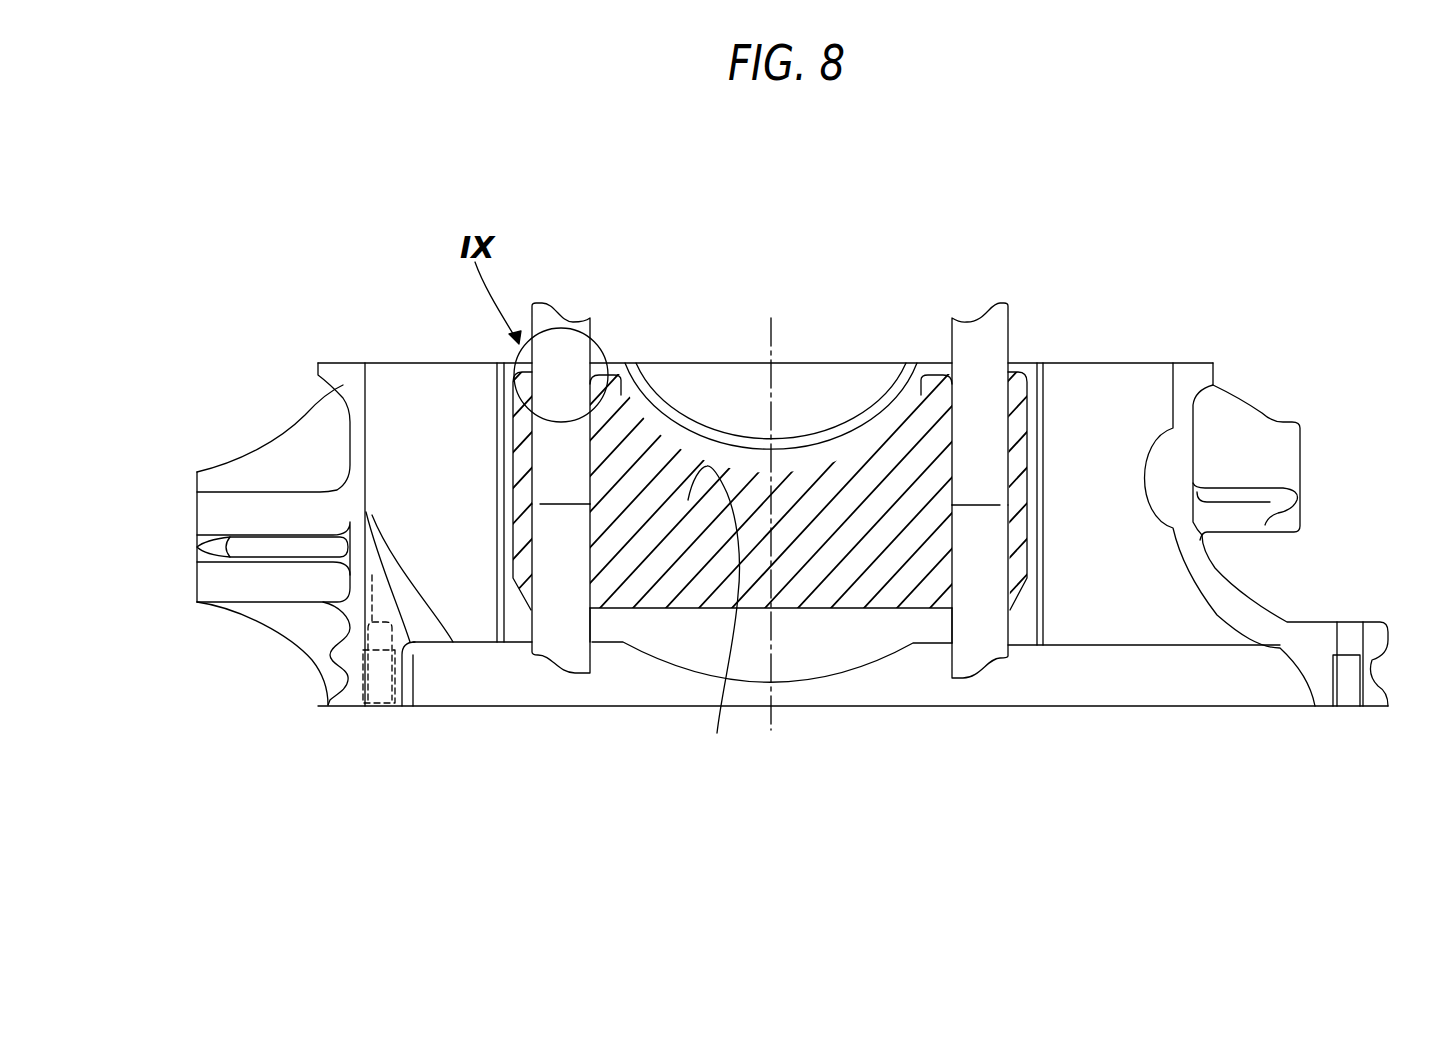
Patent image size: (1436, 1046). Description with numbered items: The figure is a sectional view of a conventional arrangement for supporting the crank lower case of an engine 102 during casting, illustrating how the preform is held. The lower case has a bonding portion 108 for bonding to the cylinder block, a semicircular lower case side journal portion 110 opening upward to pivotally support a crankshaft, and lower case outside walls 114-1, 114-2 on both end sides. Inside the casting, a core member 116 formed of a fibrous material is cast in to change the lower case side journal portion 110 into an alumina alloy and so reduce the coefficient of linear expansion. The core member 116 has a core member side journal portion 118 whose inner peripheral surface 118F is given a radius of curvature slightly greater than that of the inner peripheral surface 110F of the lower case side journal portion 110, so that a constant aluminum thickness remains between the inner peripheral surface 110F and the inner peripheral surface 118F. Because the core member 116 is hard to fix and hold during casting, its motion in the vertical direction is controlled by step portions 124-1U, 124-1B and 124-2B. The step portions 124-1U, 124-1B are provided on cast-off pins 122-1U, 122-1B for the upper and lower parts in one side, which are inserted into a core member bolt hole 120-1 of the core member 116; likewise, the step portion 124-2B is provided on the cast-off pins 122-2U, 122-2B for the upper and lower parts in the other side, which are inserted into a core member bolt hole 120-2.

The engine 102 is at (1232, 303).
The bonding portion 108 is at (1120, 363).
The lower case side journal portion 110 is at (624, 381).
The inner peripheral surface 110F is at (634, 398).
The lower case outside wall 114-1 is at (357, 433).
The lower case outside wall 114-2 is at (1185, 445).
The core member 116 is at (708, 609).
The core member side journal portion 118 is at (630, 456).
The inner peripheral surface 118F is at (717, 615).
The core member bolt hole 120-1 is at (542, 518).
The core member bolt hole 120-2 is at (1002, 518).
The cast-off pin 122-1U is at (542, 312).
The cast-off pin 122-1B is at (563, 652).
The cast-off pin 122-2U is at (985, 335).
The cast-off pin 122-2B is at (993, 648).
The step portion 124-1U is at (600, 368).
The step portion 124-1B is at (587, 612).
The step portion 124-2B is at (1015, 363).